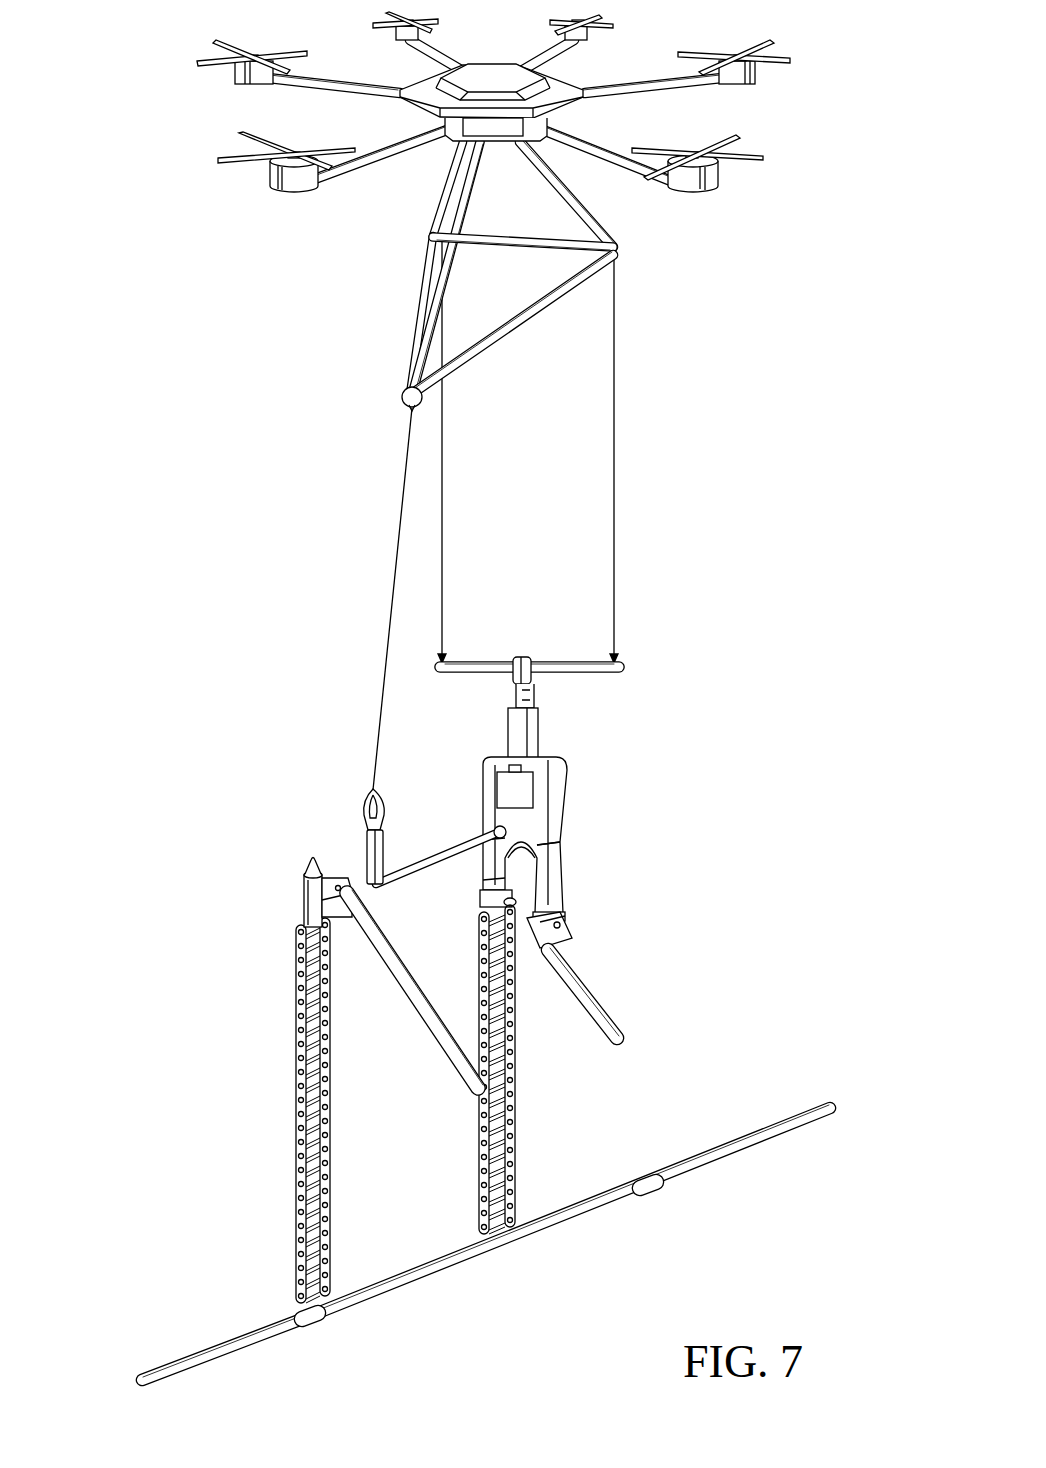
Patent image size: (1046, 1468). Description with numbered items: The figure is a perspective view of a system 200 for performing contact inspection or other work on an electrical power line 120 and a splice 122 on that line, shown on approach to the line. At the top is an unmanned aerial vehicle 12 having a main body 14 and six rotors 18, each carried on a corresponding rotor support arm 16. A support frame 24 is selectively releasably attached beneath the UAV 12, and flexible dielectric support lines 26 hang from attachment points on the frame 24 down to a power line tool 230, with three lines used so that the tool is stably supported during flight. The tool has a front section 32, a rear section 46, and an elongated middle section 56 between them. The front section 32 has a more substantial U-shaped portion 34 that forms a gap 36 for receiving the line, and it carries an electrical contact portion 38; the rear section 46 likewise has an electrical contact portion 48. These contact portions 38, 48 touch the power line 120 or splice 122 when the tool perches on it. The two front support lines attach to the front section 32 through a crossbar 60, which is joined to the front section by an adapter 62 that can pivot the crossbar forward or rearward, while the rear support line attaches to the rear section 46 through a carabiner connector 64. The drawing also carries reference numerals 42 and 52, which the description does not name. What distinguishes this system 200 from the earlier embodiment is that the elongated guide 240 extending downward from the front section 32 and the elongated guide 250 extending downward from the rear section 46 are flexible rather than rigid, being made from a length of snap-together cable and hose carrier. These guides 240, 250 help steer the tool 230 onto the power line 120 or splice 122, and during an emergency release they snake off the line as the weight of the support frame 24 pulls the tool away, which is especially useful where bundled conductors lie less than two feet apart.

The unmanned aerial vehicle 12 is at (468, 102).
The main body 14 is at (433, 103).
The rotor support arms 16 is at (334, 80).
The rotors 18 is at (222, 52).
The support frame 24 is at (598, 221).
The flexible dielectric support lines 26 is at (617, 390).
The front section 32 is at (560, 790).
The U-shaped portion 34 is at (544, 902).
The gap 36 is at (518, 884).
The electrical contact portion 38 is at (520, 850).
The handle rod 42 is at (612, 1005).
The rear section 46 is at (322, 898).
The electrical contact portion 48 is at (336, 918).
The strut 52 is at (460, 1063).
The elongated middle section 56 is at (432, 858).
The crossbar 60 is at (478, 668).
The adapter 62 is at (532, 690).
The carabiner connector 64 is at (362, 802).
The electrical power line 120 is at (765, 1132).
The splice 122 is at (525, 1238).
The system 200 is at (222, 711).
The power line tool 230 is at (668, 880).
The elongated guide 240 is at (510, 1065).
The elongated guide 250 is at (298, 1090).